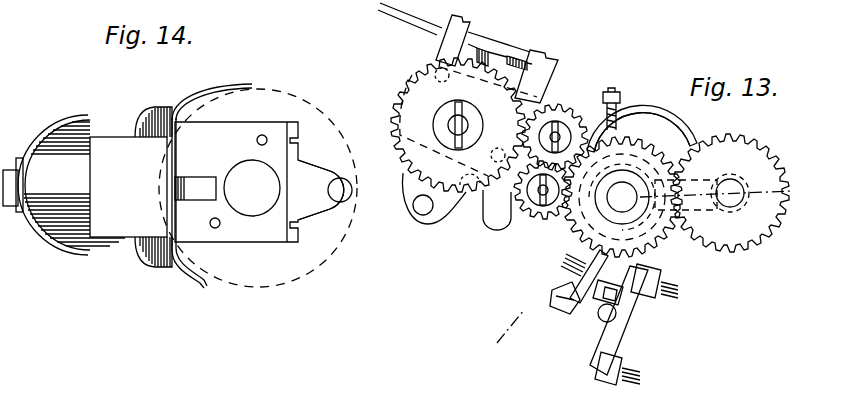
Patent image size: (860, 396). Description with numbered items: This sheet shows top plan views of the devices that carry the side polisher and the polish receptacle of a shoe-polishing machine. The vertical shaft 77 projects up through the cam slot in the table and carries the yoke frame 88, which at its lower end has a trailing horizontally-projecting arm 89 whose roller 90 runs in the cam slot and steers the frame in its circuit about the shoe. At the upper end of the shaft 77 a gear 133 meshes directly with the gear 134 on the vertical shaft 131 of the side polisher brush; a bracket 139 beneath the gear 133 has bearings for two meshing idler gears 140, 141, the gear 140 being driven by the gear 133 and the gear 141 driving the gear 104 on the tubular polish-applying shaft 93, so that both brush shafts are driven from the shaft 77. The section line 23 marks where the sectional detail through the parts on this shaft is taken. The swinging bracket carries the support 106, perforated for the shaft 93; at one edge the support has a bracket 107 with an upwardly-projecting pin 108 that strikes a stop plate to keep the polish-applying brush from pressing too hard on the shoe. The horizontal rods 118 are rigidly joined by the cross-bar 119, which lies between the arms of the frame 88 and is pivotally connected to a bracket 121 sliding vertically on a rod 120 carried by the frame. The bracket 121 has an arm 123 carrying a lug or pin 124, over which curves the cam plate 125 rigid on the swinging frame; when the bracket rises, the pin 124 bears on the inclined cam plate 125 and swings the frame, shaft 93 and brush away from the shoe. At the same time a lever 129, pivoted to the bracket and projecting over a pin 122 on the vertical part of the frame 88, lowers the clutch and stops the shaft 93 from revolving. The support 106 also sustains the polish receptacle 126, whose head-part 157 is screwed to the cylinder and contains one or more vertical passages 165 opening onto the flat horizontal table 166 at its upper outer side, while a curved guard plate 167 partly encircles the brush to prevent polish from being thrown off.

In FIG. 13, the section line 23 is at (645, 271).
In FIG. 13, the vertical shaft 77 is at (590, 232).
In FIG. 13, the yoke frame 88 is at (648, 140).
In FIG. 13, the horizontally-projecting arm 89 is at (524, 200).
In FIG. 13, the roller 90 is at (494, 222).
In FIG. 13, the tubular vertical shaft 93 is at (454, 118).
In FIG. 13, the gear 104 is at (407, 83).
In FIG. 14, the support 106 is at (259, 182).
In FIG. 13, the support 106 is at (447, 42).
In FIG. 14, the bracket 107 is at (319, 190).
In FIG. 13, the bracket 107 is at (425, 226).
In FIG. 14, the upwardly-projecting pin 108 is at (343, 186).
In FIG. 13, the upwardly-projecting pin 108 is at (413, 209).
In FIG. 13, the reciprocable horizontal rods 118 is at (672, 290).
In FIG. 13, the cross-bar 119 is at (590, 347).
In FIG. 13, the rod 120 is at (612, 292).
In FIG. 13, the vertically slidable bracket 121 is at (598, 318).
In FIG. 13, the pin 122 is at (617, 92).
In FIG. 13, the arm 123 is at (556, 288).
In FIG. 13, the lug or pin 124 is at (585, 266).
In FIG. 13, the cam plate 125 is at (578, 235).
In FIG. 14, the polish receptacle 126 is at (68, 117).
In FIG. 13, the lever 129 is at (643, 114).
In FIG. 13, the vertical shaft 131 is at (733, 200).
In FIG. 13, the gear 133 is at (656, 242).
In FIG. 13, the gear 134 is at (742, 147).
In FIG. 13, the bracket 139 is at (543, 218).
In FIG. 13, the idler gear 140 is at (520, 200).
In FIG. 13, the idler gear 141 is at (559, 113).
In FIG. 14, the head-part of the receptacle 157 is at (118, 270).
In FIG. 14, the perforations or passages 165 is at (146, 188).
In FIG. 14, the flat horizontal table or surface 166 is at (116, 217).
In FIG. 14, the curved guard plate 167 is at (205, 96).